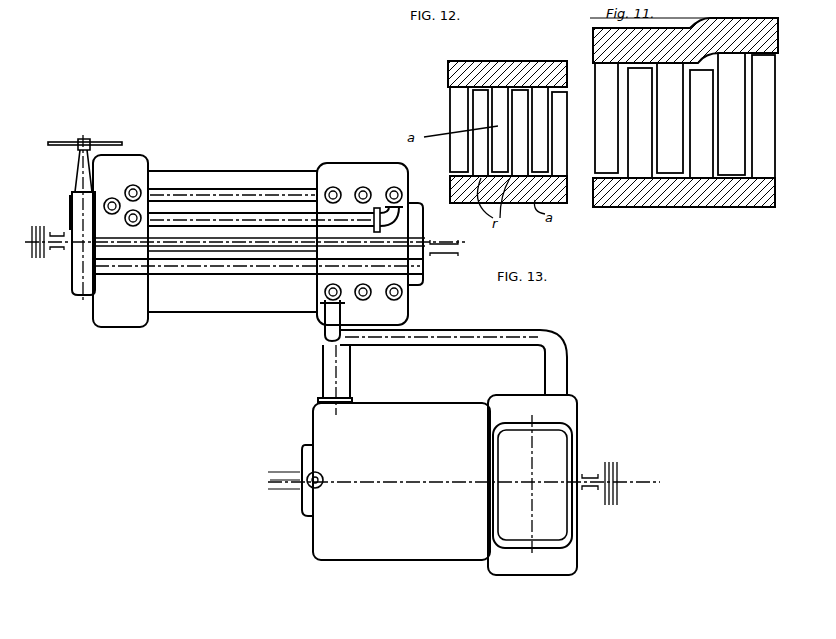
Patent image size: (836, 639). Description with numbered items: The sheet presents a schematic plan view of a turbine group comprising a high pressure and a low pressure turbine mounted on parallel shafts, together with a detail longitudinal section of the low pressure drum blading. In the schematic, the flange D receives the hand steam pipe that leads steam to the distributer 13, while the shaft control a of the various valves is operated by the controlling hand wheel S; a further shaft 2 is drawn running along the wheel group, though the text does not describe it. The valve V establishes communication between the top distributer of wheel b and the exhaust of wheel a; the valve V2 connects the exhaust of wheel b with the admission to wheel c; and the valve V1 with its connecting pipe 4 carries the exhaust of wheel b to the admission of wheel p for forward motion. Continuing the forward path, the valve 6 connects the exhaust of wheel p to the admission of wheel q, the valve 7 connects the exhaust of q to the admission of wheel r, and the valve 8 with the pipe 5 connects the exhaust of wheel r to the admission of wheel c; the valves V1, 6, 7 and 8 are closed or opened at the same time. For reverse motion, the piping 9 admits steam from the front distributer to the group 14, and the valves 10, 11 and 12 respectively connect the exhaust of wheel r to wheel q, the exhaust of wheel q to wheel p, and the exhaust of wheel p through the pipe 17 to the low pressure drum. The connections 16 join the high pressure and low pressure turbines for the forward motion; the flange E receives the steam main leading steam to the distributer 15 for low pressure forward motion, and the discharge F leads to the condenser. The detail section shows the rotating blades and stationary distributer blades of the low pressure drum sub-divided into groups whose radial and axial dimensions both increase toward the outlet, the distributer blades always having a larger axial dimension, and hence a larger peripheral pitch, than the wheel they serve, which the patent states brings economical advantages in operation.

In FIG. 13, the shaft 2 is at (187, 244).
In FIG. 13, the connecting pipe 4 is at (202, 194).
In FIG. 13, the pipe 5 is at (214, 224).
In FIG. 13, the valve 6 is at (333, 186).
In FIG. 13, the valve 7 is at (363, 186).
In FIG. 13, the valve 8 is at (394, 188).
In FIG. 13, the piping 9 is at (195, 275).
In FIG. 13, the valve 10 is at (394, 300).
In FIG. 13, the valve 11 is at (364, 299).
In FIG. 13, the valve 12 is at (338, 288).
In FIG. 13, the distributer 13 is at (72, 292).
In FIG. 13, the group 14 is at (418, 214).
In FIG. 13, the distributer 15 is at (305, 452).
In FIG. 13, the connections 16 is at (346, 357).
In FIG. 13, the pipe 17 is at (496, 332).
In FIG. 13, the valve V is at (110, 198).
In FIG. 13, the valve V1 is at (134, 185).
In FIG. 13, the valve V2 is at (130, 225).
In FIG. 13, the controlling hand wheel S is at (85, 159).
In FIG. 13, the flange D is at (58, 215).
In FIG. 13, the flange E is at (320, 478).
In FIG. 13, the discharge to the condenser F is at (532, 485).
In FIG. 11, the shaft control a is at (680, 148).
In FIG. 11, the wheel r is at (703, 180).